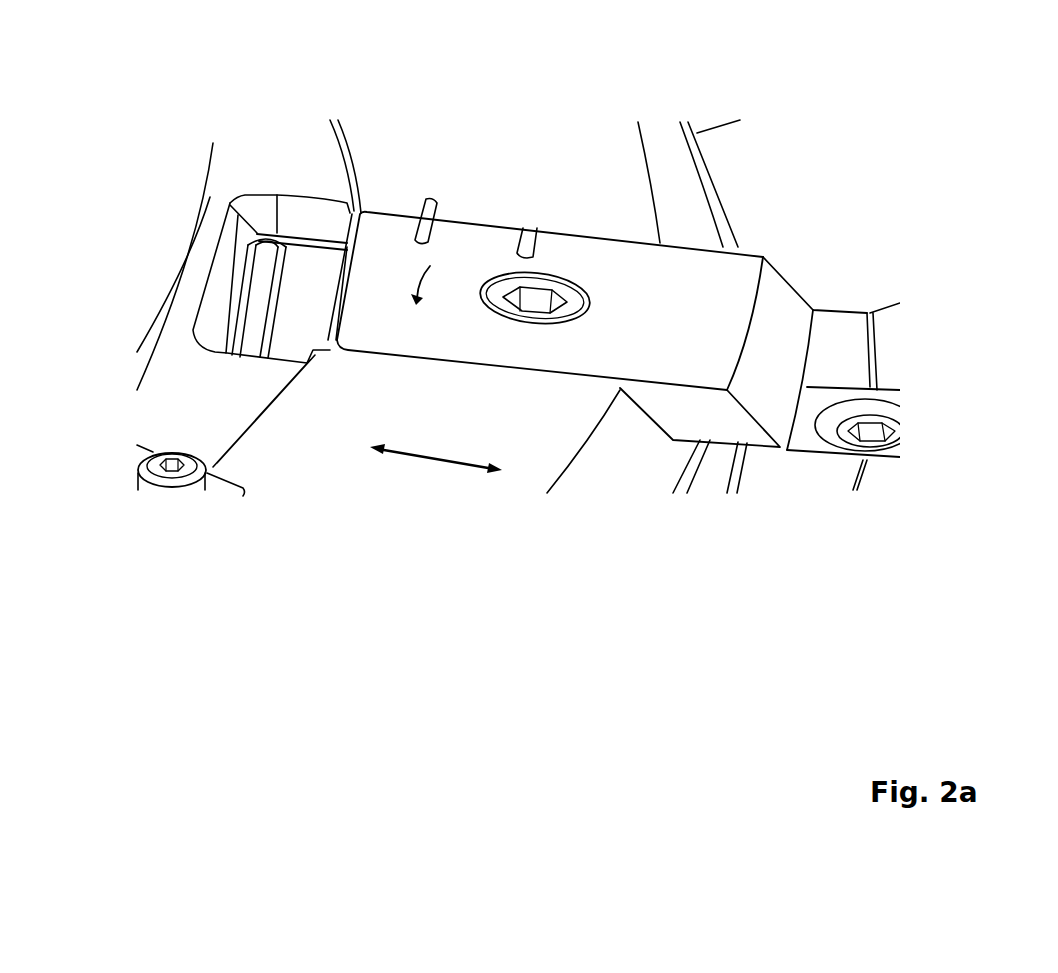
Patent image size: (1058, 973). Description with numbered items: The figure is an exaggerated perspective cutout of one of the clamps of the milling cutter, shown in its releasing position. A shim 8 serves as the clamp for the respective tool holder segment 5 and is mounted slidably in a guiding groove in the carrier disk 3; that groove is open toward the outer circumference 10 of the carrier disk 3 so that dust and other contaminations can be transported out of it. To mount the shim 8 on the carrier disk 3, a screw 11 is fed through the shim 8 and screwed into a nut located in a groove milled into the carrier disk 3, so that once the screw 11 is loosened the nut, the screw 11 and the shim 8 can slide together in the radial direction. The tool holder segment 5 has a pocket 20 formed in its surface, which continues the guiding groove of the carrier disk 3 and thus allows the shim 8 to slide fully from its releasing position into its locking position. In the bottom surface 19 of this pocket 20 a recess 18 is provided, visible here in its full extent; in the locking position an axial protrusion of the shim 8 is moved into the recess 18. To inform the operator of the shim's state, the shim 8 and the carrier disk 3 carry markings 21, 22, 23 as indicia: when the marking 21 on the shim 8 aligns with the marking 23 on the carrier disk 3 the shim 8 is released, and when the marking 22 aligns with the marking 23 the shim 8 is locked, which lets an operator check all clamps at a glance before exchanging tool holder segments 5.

The carrier disk 3 is at (252, 455).
The tool holder segment 5 is at (288, 155).
The shim 8 is at (388, 230).
The outer circumference 10 is at (732, 470).
The screw 11 is at (575, 300).
The recess 18 is at (263, 273).
The bottom surface 19 is at (312, 266).
The pocket 20 is at (222, 312).
The marking 21 is at (420, 245).
The marking 22 is at (535, 230).
The marking 23 is at (435, 200).